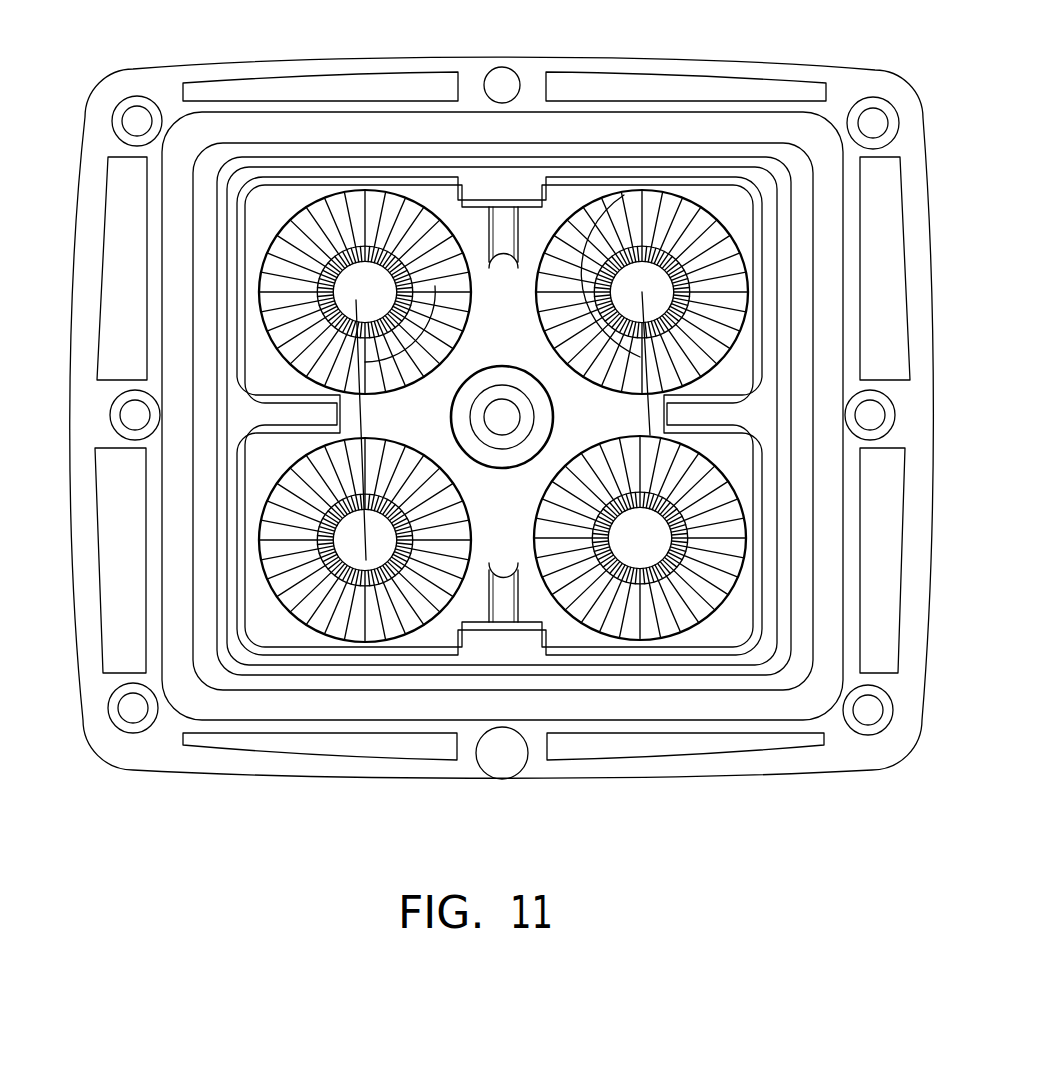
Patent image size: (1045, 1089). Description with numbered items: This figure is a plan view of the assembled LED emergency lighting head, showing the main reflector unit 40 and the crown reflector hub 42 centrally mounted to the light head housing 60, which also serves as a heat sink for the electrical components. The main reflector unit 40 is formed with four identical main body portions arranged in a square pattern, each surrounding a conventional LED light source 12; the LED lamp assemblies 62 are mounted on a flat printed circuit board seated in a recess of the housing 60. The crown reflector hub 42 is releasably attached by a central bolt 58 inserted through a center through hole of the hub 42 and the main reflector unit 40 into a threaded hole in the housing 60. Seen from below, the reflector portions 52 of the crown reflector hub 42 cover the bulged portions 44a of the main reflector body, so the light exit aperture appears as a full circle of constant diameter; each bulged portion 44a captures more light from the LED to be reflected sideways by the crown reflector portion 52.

The LED light source 12 is at (705, 168).
The main reflector unit 40 is at (500, 648).
The crown reflector hub 42 is at (500, 484).
The bulged portion 44a is at (620, 207).
The reflector portion 52 is at (493, 330).
The central bolt 58 is at (503, 418).
The light head housing 60 is at (877, 752).
The LED lamp assembly 62 is at (366, 560).